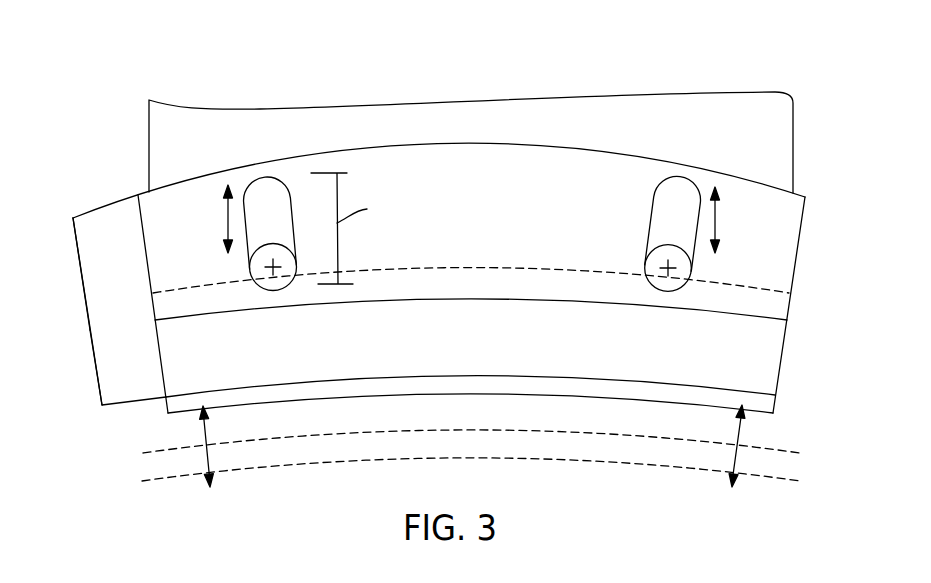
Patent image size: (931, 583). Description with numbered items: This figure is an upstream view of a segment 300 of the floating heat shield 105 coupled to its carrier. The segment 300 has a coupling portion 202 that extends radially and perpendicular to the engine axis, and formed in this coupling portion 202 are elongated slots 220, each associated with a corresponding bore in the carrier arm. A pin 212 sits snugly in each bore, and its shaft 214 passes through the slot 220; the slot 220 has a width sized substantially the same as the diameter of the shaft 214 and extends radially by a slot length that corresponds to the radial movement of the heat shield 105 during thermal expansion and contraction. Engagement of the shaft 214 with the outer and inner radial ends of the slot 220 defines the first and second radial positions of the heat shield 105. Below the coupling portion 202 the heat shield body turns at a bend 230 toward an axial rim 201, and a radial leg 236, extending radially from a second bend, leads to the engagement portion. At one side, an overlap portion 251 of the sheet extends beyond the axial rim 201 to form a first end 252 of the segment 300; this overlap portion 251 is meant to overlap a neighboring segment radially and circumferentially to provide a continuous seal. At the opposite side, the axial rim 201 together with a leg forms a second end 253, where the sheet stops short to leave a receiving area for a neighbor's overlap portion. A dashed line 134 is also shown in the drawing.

The segment 300 is at (110, 66).
The floating heat shield 105 is at (540, 165).
The coupling portion 202 is at (453, 165).
The second end 253 is at (804, 304).
The bend 230 is at (207, 317).
The axial rim 201 is at (286, 393).
The body structure 134 is at (358, 432).
The radial leg 236 is at (165, 360).
The overlap portion 251 is at (104, 186).
The first end 252 is at (82, 362).
The slot 220 is at (252, 172).
The pin 212 is at (250, 268).
The shaft 214 is at (274, 290).